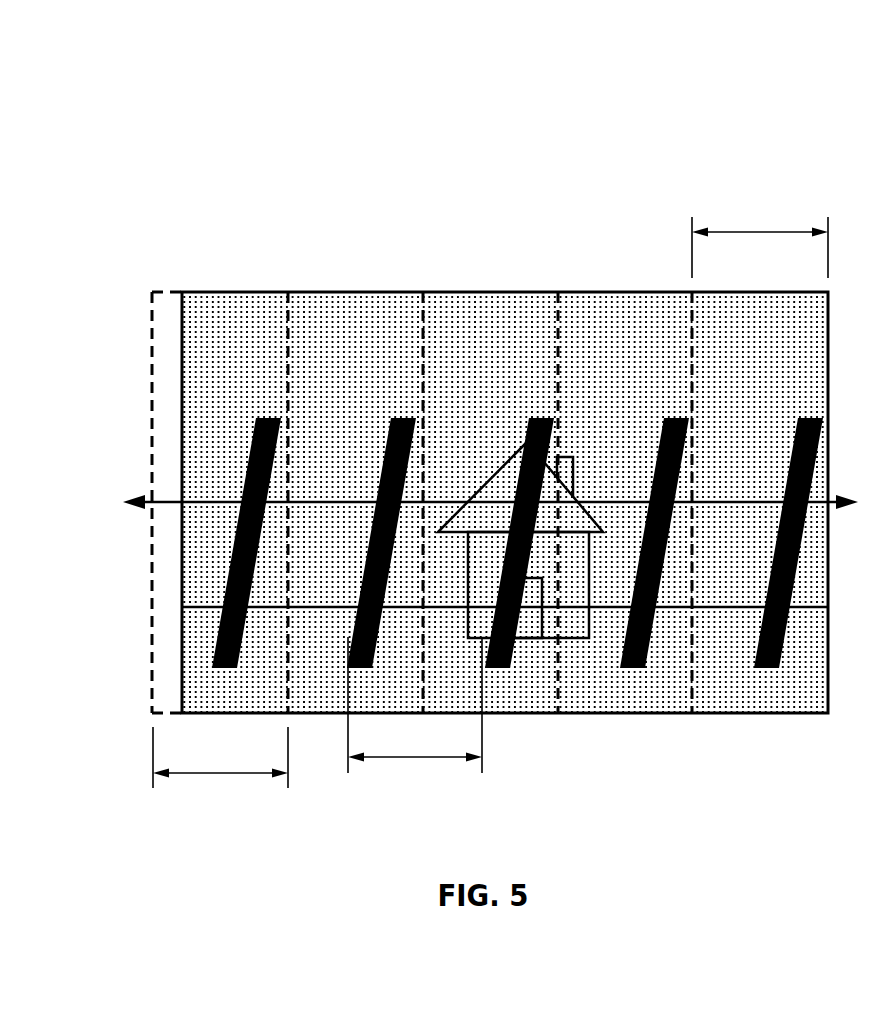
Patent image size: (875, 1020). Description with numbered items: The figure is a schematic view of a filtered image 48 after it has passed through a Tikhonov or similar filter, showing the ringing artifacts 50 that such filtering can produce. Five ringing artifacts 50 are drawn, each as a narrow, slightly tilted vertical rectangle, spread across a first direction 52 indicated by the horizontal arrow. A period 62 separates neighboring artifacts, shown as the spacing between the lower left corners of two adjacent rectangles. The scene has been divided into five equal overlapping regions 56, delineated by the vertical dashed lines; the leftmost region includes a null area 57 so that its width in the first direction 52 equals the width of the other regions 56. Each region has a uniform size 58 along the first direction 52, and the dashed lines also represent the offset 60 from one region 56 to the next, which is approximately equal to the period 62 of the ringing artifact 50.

The filtered image 48 is at (303, 117).
The overlapping regions 56 is at (402, 82).
The null area 57 is at (165, 300).
The first direction 52 is at (215, 502).
The ringing artifacts 50 is at (805, 440).
The offset 60 is at (423, 645).
The size 58 is at (490, 503).
The period 62 is at (415, 712).